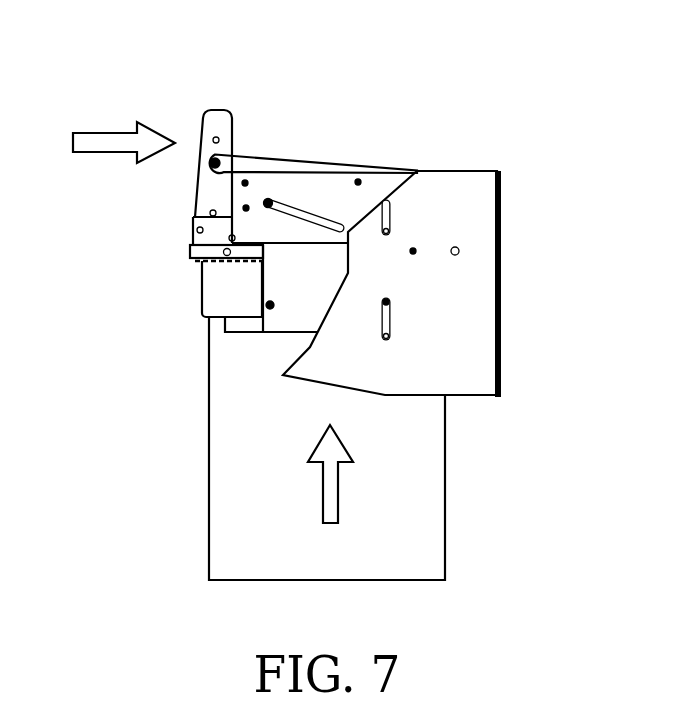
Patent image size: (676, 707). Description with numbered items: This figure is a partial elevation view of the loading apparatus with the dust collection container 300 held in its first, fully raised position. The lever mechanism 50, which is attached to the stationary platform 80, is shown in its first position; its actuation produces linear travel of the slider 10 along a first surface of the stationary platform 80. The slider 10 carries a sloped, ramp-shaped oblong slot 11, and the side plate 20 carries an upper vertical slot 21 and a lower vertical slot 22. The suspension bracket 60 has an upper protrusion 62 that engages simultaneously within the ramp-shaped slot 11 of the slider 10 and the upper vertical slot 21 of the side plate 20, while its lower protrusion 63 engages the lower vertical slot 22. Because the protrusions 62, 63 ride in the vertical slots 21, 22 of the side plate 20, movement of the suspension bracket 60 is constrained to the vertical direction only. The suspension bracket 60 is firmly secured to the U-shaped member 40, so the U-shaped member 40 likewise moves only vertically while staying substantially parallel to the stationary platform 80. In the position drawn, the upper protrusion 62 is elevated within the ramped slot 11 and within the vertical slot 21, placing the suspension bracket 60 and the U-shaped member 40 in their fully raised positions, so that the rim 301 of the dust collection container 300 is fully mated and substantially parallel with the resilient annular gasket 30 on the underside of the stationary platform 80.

The slider 10 is at (278, 163).
The sloped oblong slot 11 is at (318, 214).
The side plate 20 is at (489, 401).
The upper vertical slot 21 is at (392, 218).
The lower vertical slot 22 is at (390, 327).
The annular gasket 30 is at (188, 256).
The rim 301 is at (203, 265).
The U-shaped member 40 is at (225, 320).
The lever mechanism 50 is at (205, 112).
The suspension bracket 60 is at (262, 281).
The upper protrusion 62 is at (270, 201).
The lower protrusion 63 is at (390, 304).
The stationary platform 80 is at (187, 240).
The dust collection container 300 is at (447, 548).